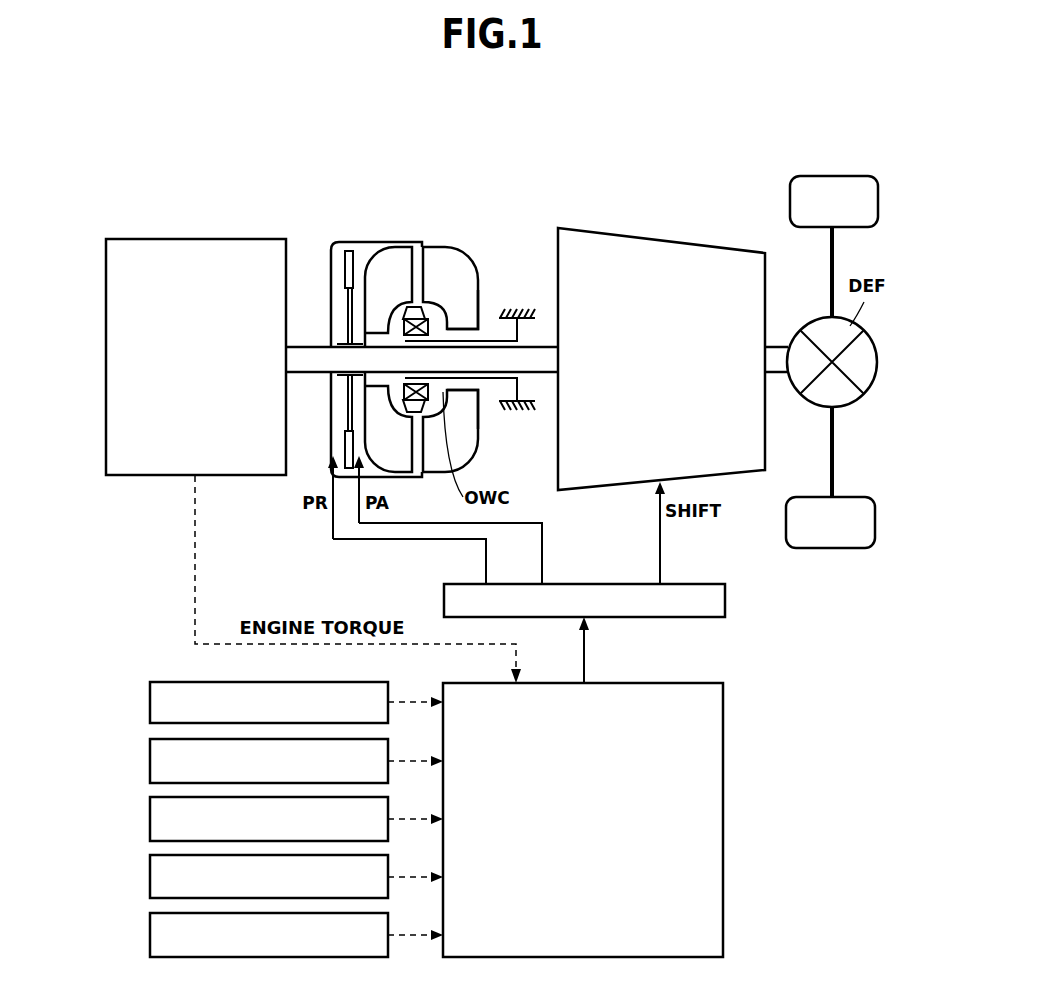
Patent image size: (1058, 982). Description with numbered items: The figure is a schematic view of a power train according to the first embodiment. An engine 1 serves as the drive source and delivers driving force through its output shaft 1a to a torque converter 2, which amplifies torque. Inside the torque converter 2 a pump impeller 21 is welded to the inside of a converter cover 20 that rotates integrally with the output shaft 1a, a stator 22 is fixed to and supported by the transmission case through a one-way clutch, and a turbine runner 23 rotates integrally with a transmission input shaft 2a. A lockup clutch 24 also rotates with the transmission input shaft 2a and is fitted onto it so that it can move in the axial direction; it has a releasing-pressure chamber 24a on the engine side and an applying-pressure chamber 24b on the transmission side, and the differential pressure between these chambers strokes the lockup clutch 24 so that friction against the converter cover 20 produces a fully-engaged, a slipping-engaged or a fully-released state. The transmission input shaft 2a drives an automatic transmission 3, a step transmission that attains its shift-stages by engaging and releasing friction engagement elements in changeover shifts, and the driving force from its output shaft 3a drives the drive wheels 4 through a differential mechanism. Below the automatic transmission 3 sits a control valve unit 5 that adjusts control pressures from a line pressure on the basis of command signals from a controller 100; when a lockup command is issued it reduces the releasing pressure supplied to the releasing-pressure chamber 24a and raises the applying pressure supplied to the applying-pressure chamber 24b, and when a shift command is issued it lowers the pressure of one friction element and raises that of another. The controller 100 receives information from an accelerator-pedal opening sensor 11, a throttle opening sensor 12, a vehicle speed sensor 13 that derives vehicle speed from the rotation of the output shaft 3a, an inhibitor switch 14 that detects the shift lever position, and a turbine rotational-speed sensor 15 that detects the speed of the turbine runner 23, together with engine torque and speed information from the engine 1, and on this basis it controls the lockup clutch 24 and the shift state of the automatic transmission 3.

The engine 1 is at (196, 238).
The output shaft 1a is at (306, 346).
The torque converter 2 is at (440, 233).
The transmission input shaft 2a is at (546, 346).
The automatic transmission 3 is at (666, 226).
The output shaft 3a is at (778, 347).
The drive wheels 4 is at (832, 549).
The control valve unit 5 is at (698, 585).
The accelerator-pedal opening sensor 11 is at (150, 702).
The throttle opening sensor 12 is at (150, 761).
The vehicle speed sensor 13 is at (150, 819).
The inhibitor switch 14 is at (150, 877).
The turbine rotational-speed sensor 15 is at (150, 935).
The converter cover 20 is at (447, 247).
The pump impeller 21 is at (458, 270).
The stator 22 is at (430, 318).
The turbine runner 23 is at (397, 257).
The lockup clutch 24 is at (350, 248).
The releasing-pressure chamber 24a is at (338, 262).
The applying-pressure chamber 24b is at (358, 262).
The controller 100 is at (700, 683).